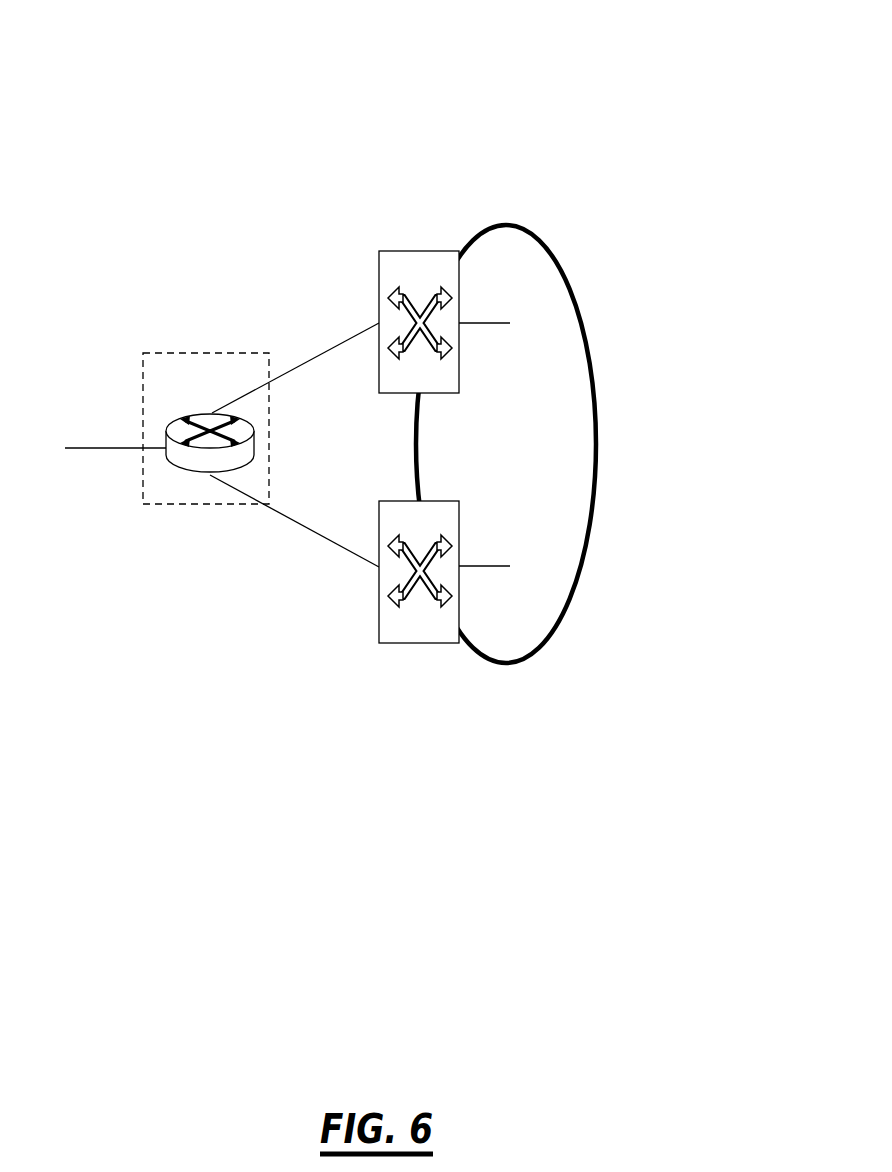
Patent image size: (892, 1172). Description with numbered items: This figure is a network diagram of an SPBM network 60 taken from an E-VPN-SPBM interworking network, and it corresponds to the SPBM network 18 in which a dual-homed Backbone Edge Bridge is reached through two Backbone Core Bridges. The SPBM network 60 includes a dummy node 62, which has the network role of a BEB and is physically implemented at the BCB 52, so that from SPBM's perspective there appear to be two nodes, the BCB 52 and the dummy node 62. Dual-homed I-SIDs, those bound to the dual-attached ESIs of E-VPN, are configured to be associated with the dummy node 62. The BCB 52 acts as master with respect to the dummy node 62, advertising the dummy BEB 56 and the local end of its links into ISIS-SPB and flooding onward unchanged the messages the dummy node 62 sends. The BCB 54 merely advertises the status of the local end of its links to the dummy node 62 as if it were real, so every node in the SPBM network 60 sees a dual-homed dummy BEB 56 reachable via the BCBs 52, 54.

The SPBM network 60 is at (507, 68).
The SPBM network 18 is at (505, 224).
The Backbone Core Bridge 52 is at (415, 251).
The Backbone Core Bridge 54 is at (412, 645).
The dummy node 62 is at (213, 353).
The dummy Backbone Edge Bridge 56 is at (185, 472).